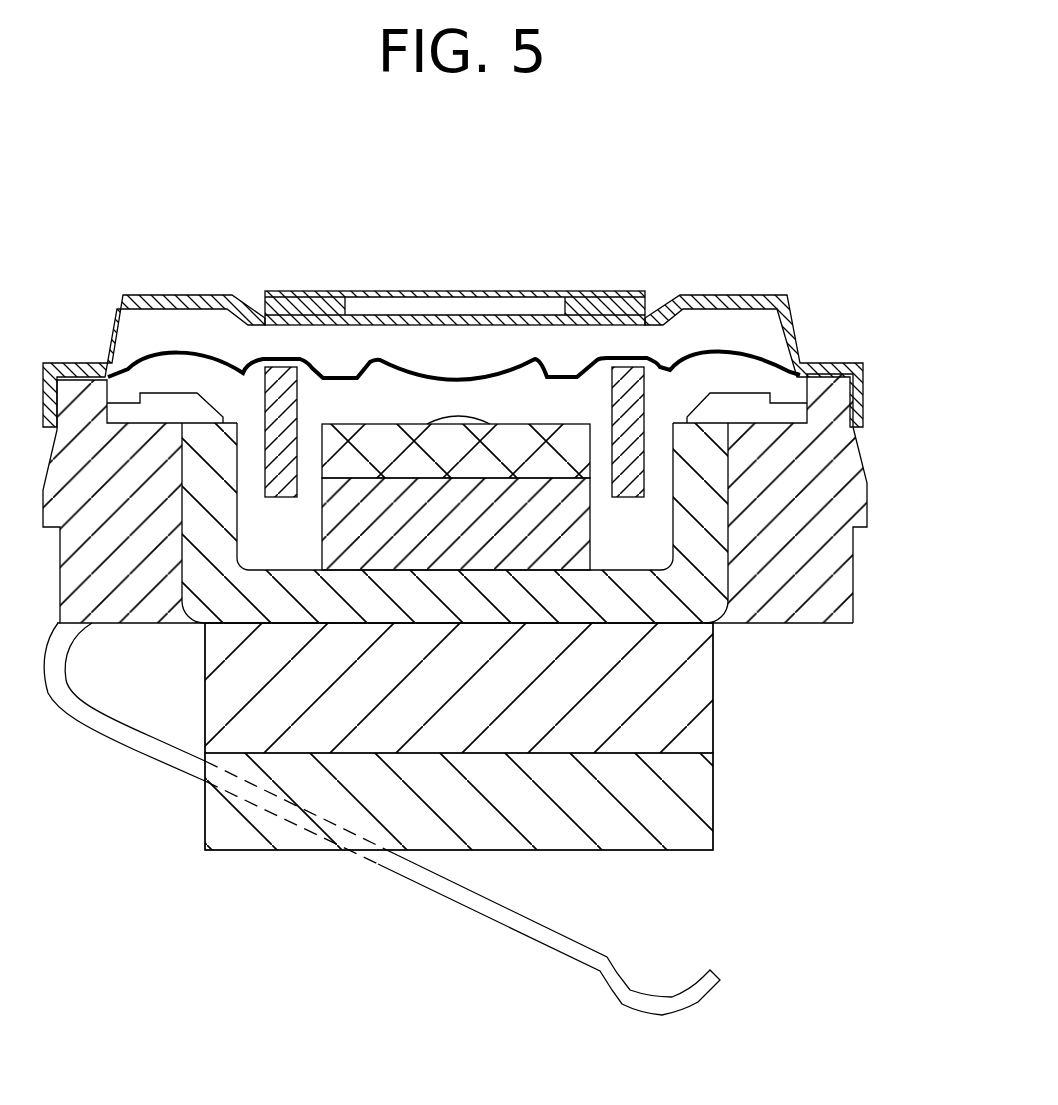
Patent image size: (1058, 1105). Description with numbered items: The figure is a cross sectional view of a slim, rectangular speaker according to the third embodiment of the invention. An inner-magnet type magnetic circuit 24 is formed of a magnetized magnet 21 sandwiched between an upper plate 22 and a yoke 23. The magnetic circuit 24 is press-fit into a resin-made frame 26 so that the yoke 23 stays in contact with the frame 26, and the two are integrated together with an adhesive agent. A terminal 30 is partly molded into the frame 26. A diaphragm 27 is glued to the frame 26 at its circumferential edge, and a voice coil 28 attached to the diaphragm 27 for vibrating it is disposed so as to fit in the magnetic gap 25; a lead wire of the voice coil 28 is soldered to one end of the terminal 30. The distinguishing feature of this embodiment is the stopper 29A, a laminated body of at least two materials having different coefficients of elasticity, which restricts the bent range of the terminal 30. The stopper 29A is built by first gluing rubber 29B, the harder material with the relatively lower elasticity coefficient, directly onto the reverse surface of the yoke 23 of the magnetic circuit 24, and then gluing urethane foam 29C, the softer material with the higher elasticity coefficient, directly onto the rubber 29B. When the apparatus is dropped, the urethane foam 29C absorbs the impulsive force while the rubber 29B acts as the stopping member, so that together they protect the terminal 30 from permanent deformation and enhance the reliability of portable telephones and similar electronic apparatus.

The magnet 21 is at (417, 537).
The upper plate 22 is at (493, 463).
The yoke 23 is at (293, 607).
The magnetic circuit 24 is at (430, 729).
The magnetic gap 25 is at (655, 442).
The frame 26 is at (822, 443).
The diaphragm 27 is at (440, 368).
The voice coil 28 is at (277, 370).
The stopper 29A is at (738, 772).
The rubber 29B is at (688, 682).
The urethane foam 29C is at (717, 843).
The terminal 30 is at (150, 750).